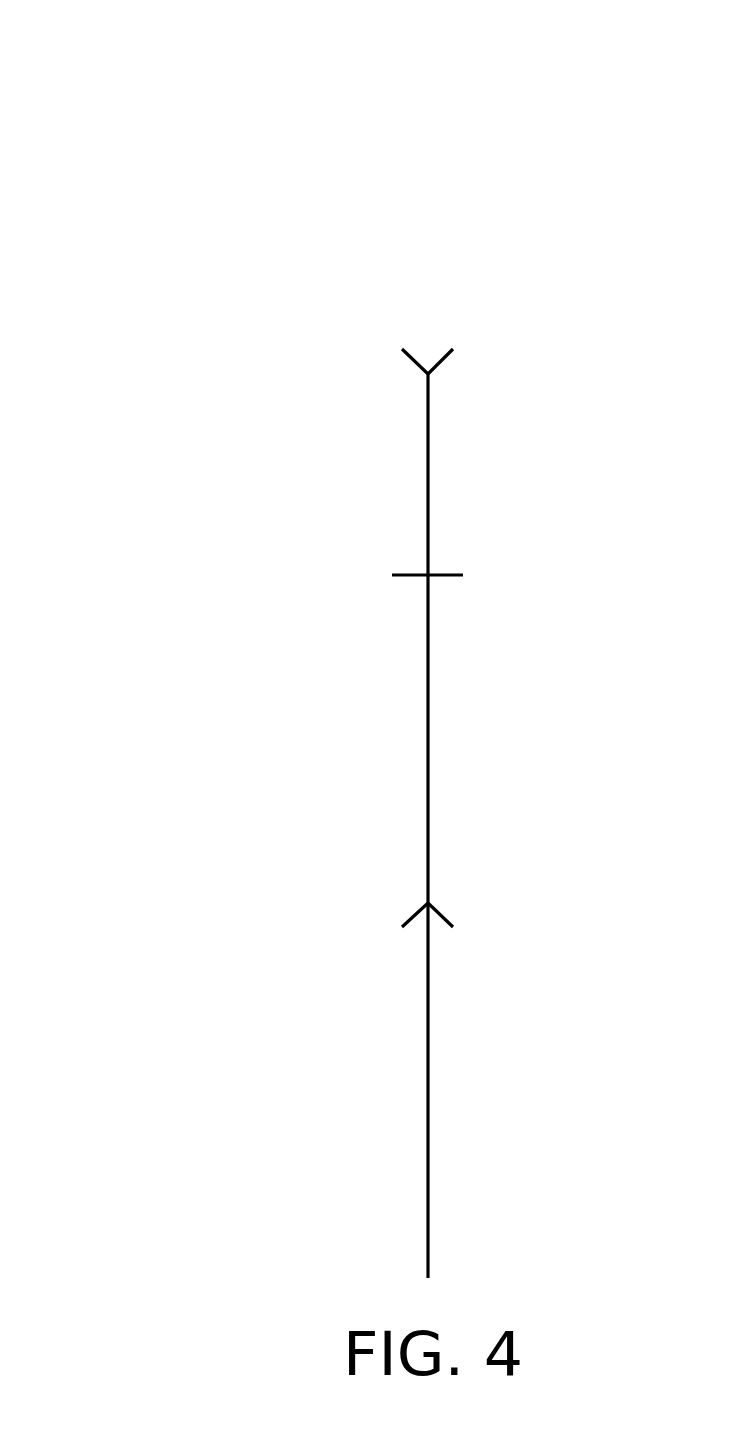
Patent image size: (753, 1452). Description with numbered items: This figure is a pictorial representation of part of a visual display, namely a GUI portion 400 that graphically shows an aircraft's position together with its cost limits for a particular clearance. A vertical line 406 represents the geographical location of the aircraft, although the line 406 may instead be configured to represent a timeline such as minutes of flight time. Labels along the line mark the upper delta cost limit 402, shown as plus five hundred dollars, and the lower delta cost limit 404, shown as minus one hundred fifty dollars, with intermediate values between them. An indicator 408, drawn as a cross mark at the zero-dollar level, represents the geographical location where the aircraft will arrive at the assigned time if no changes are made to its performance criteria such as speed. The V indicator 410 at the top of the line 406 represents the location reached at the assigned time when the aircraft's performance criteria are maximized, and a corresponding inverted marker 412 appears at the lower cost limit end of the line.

The GUI portion 400 is at (360, 639).
The upper delta cost limit 402 is at (208, 375).
The lower delta cost limit 404 is at (218, 900).
The line 406 is at (428, 1228).
The indicator 408 is at (536, 558).
The V indicator 410 is at (523, 353).
The lower end marker 412 is at (523, 894).